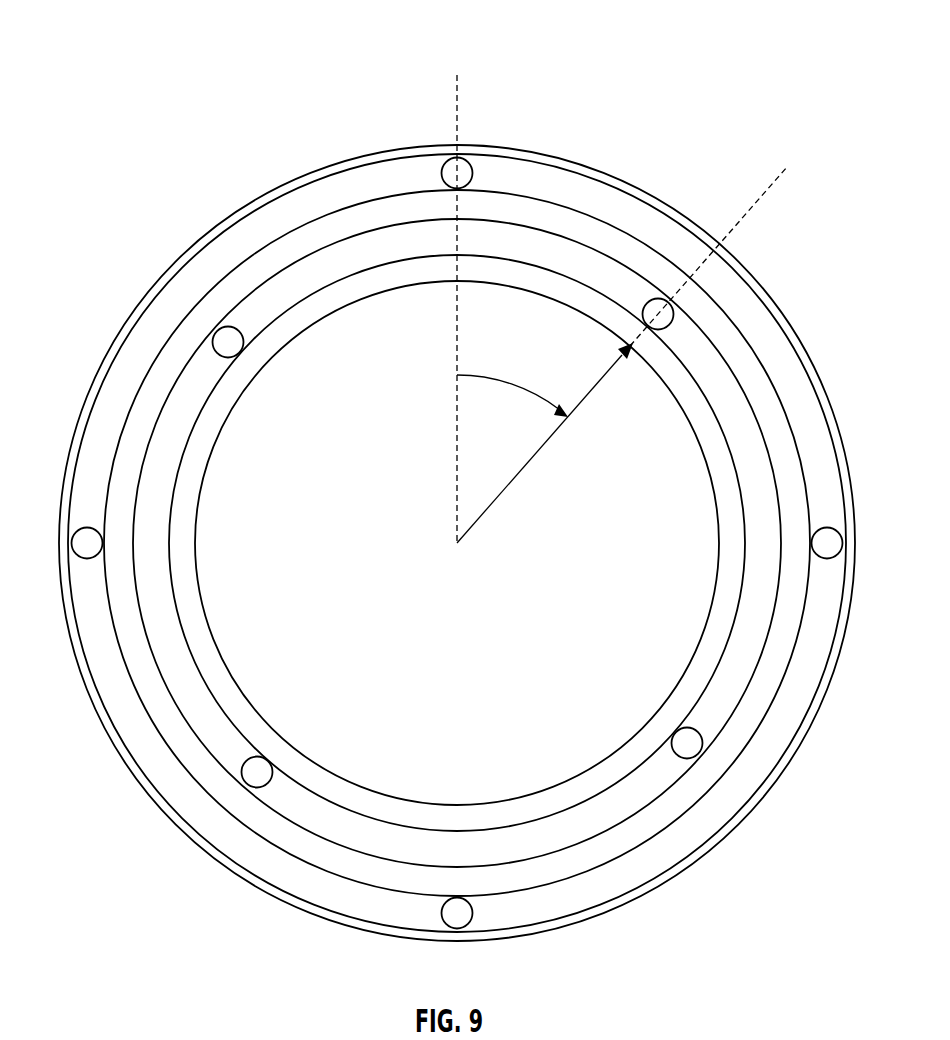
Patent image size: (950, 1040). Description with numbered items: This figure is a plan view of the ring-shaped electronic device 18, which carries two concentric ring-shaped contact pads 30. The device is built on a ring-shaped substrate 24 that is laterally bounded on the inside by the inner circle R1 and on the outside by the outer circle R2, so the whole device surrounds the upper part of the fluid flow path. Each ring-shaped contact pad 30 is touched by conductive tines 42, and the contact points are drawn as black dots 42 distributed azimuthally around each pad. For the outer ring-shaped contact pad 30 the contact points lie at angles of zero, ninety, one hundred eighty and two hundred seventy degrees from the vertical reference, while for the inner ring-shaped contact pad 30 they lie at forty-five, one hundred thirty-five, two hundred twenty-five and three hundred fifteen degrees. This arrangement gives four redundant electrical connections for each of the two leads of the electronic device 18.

The electronic device 18 is at (731, 75).
The ring-shaped substrate 24 is at (313, 173).
The ring-shaped contact pads 30 is at (515, 242).
The conductive tines 42 is at (447, 161).
The inner circle R1 is at (222, 657).
The outer circle R2 is at (85, 403).